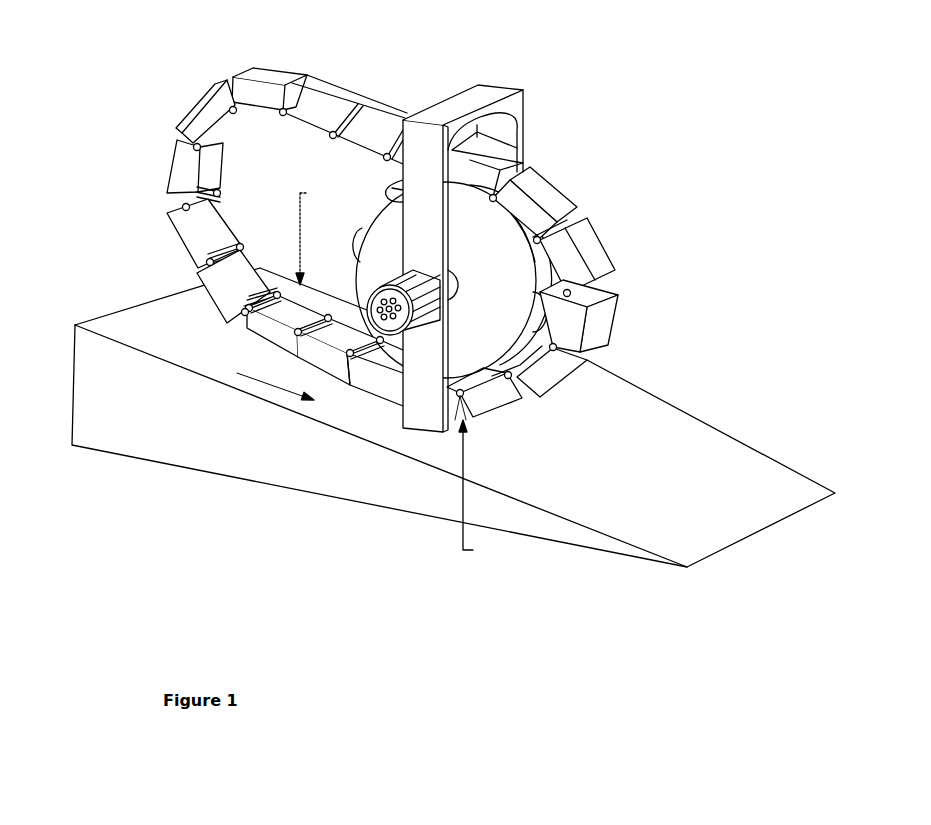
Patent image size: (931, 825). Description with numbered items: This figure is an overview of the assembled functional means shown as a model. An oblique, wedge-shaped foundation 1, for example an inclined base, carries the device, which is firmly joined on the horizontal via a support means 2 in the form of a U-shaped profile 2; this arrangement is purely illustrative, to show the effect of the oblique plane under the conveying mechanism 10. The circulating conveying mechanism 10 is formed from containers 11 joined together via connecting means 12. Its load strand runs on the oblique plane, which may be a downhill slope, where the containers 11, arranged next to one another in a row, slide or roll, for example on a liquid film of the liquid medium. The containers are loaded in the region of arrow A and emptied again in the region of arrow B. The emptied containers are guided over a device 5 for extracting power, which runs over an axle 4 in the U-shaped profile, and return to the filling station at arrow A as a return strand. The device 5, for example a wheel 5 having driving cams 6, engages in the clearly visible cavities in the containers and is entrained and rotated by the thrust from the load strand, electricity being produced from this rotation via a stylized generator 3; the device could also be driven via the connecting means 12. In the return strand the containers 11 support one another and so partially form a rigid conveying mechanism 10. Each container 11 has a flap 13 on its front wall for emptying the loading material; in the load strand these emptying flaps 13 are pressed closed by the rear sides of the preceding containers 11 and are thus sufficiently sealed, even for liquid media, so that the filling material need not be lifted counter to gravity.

The foundation 1 is at (218, 447).
The support means 2 is at (478, 93).
The generator 3 is at (450, 268).
The axle 4 is at (450, 283).
The device for extracting power 5 is at (500, 290).
The driving cams 6 is at (400, 190).
The conveying mechanism 10 is at (376, 74).
The containers 11 is at (218, 222).
The connecting means 12 is at (283, 120).
The flap 13 is at (183, 200).